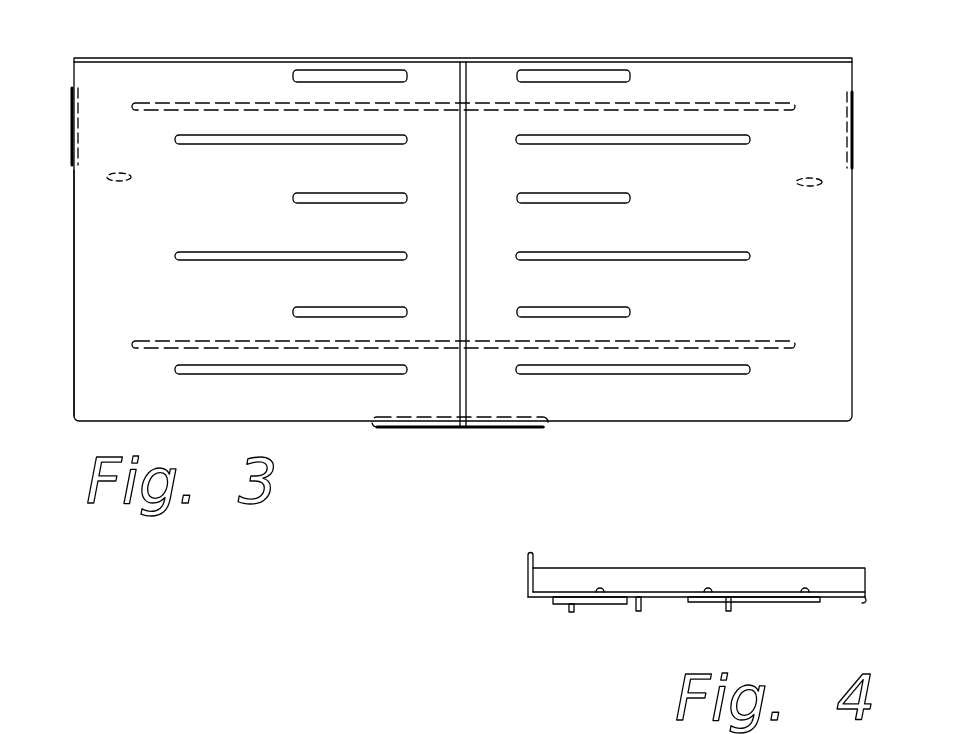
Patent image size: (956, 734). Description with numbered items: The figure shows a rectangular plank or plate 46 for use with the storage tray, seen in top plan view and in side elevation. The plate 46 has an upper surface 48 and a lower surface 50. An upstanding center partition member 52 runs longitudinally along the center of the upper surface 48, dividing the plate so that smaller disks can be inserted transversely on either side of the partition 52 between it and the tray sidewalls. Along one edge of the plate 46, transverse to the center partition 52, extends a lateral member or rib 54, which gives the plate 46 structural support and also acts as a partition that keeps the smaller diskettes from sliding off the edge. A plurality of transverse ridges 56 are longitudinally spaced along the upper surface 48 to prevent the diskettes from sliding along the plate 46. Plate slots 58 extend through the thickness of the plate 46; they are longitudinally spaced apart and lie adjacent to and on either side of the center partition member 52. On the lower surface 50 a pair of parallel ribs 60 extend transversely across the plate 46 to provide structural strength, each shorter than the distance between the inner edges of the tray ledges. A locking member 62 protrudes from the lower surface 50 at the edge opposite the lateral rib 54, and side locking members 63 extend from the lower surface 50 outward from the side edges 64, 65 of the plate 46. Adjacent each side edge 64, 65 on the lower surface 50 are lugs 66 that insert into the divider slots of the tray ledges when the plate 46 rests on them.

In FIG. 3, the plate 46 is at (780, 36).
In FIG. 4, the plate 46 is at (512, 552).
In FIG. 3, the upper surface 48 is at (813, 218).
In FIG. 4, the upper surface 48 is at (787, 590).
In FIG. 4, the lower surface 50 is at (687, 610).
In FIG. 3, the center partition member 52 is at (466, 175).
In FIG. 4, the center partition member 52 is at (628, 580).
In FIG. 3, the lateral rib 54 is at (492, 58).
In FIG. 4, the lateral rib 54 is at (533, 570).
In FIG. 3, the transverse ridges 56 is at (219, 133).
In FIG. 4, the transverse ridges 56 is at (708, 590).
In FIG. 3, the plate slots 58 is at (313, 194).
In FIG. 3, the parallel ribs 60 is at (243, 342).
In FIG. 4, the parallel ribs 60 is at (728, 612).
In FIG. 3, the locking member 62 is at (503, 427).
In FIG. 4, the locking member 62 is at (864, 603).
In FIG. 3, the side locking members 63 is at (72, 88).
In FIG. 4, the side locking members 63 is at (560, 606).
In FIG. 3, the side edge 64 is at (74, 315).
In FIG. 4, the side edge 64 is at (820, 603).
In FIG. 3, the side edge 65 is at (853, 283).
In FIG. 3, the lugs 66 is at (107, 181).
In FIG. 4, the lugs 66 is at (630, 608).